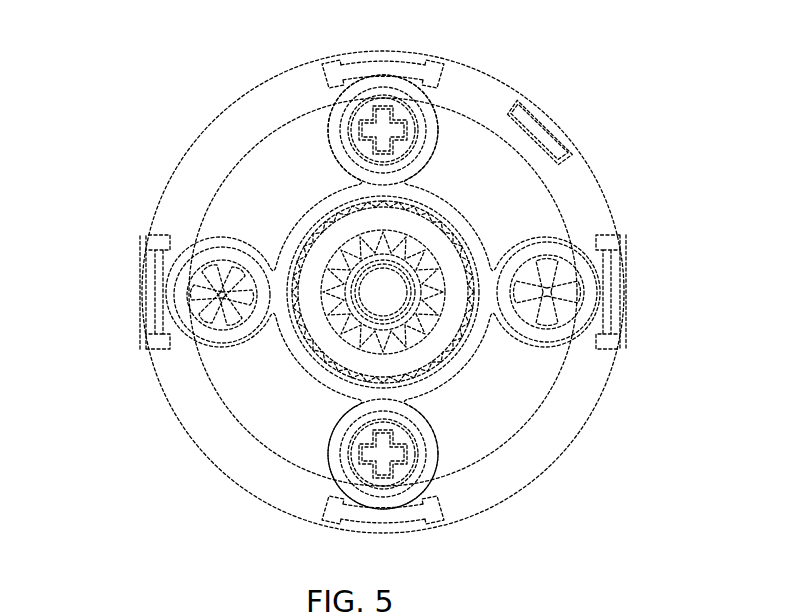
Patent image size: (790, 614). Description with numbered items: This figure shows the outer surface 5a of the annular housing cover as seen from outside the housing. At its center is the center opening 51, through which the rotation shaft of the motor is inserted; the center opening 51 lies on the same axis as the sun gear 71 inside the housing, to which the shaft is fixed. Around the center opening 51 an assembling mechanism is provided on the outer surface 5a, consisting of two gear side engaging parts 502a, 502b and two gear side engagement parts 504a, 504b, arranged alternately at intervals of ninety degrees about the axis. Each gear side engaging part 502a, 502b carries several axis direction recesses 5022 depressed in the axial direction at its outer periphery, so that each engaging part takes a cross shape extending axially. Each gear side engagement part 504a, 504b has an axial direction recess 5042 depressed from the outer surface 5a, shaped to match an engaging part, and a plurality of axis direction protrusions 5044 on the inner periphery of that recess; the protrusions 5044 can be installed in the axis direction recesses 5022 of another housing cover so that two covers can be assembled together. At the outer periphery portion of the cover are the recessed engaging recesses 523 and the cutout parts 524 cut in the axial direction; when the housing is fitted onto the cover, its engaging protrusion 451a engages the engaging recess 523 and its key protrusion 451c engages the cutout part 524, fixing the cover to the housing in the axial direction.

The outer surface 5a is at (550, 428).
The center opening 51 is at (335, 250).
The sun gear 71 is at (343, 296).
The gear side engaging part 502a is at (368, 96).
The gear side engaging part 502b is at (360, 457).
The axis direction recess 5022 is at (412, 94).
The gear side engagement part 504a is at (139, 192).
The gear side engagement part 504b is at (549, 260).
The axial direction recess 5042 is at (131, 258).
The axis direction protrusion 5044 is at (222, 186).
The engaging protrusion 451a is at (684, 267).
The key protrusion 451c is at (569, 82).
The engaging recess 523 is at (603, 303).
The cutout part 524 is at (547, 132).